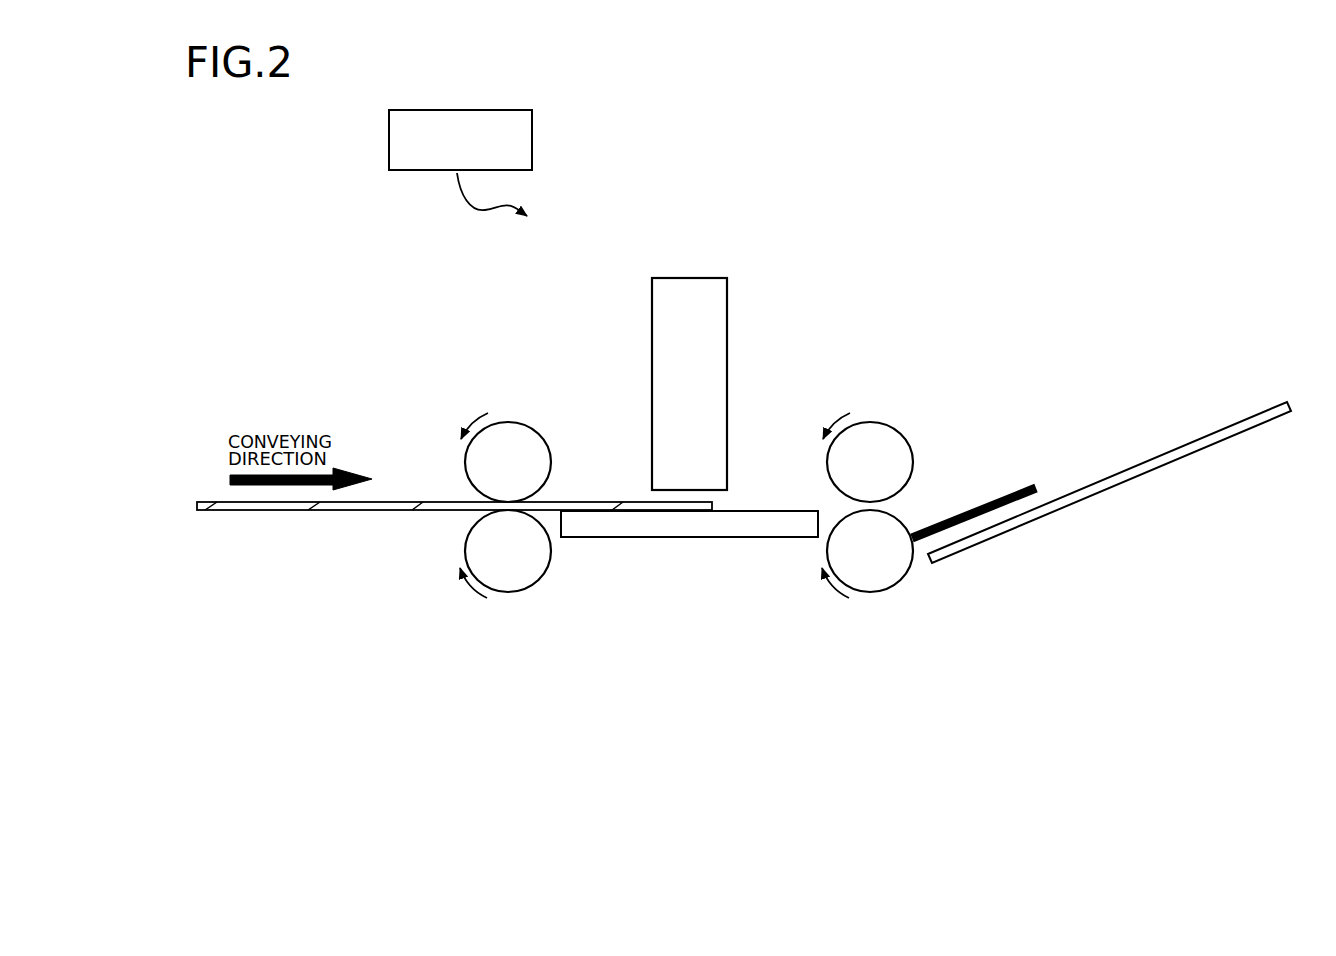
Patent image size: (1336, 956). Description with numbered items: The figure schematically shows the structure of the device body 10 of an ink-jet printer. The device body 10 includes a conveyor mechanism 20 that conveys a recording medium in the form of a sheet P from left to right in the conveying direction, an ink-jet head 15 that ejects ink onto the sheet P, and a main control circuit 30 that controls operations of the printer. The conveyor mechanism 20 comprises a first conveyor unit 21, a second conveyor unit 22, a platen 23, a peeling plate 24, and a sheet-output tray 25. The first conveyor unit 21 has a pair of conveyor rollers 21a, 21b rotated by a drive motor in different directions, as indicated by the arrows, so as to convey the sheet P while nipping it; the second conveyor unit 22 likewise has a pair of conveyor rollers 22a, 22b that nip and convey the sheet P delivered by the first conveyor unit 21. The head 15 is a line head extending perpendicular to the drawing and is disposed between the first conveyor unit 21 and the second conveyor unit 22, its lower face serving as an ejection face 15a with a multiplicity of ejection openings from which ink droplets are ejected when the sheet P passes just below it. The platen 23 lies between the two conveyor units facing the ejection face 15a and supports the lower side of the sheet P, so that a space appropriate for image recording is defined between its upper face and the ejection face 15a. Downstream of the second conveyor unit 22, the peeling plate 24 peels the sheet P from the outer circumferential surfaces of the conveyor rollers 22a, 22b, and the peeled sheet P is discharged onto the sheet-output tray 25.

The device body 10 is at (812, 250).
The ink-jet head 15 is at (677, 393).
The ejection face 15a is at (714, 498).
The conveyor mechanism 20 is at (840, 745).
The first conveyor unit 21 is at (524, 558).
The conveyor roller 21a is at (505, 589).
The conveyor roller 21b is at (508, 462).
The second conveyor unit 22 is at (885, 559).
The conveyor roller 22a is at (872, 592).
The conveyor roller 22b is at (873, 462).
The platen 23 is at (688, 528).
The peeling plate 24 is at (1021, 489).
The sheet-output tray 25 is at (1253, 425).
The main control circuit 30 is at (485, 109).
The sheet P is at (578, 501).